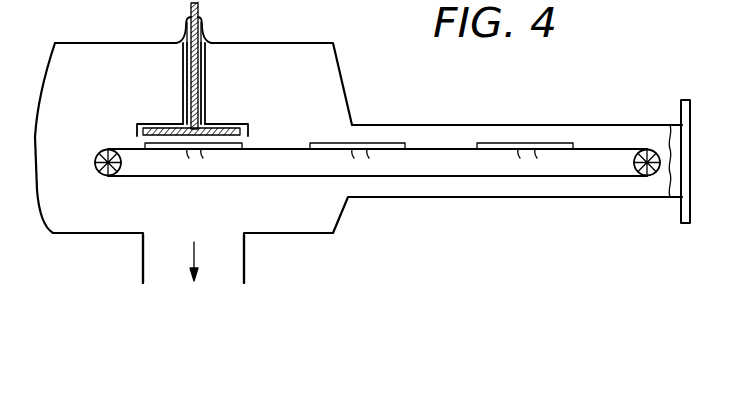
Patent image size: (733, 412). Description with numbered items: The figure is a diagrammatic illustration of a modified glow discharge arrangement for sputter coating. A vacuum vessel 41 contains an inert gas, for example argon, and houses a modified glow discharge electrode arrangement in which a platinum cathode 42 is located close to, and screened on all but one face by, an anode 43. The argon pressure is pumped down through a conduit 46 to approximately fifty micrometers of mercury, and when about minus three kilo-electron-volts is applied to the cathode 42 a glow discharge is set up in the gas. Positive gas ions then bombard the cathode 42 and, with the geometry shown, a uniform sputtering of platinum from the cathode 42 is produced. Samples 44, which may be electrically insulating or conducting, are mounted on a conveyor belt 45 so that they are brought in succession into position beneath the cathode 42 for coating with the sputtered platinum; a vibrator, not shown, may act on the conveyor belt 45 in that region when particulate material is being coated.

The vacuum vessel 41 is at (348, 75).
The platinum cathode 42 is at (222, 125).
The anode 43 is at (250, 128).
The samples 44 is at (486, 147).
The conveyor belt 45 is at (628, 152).
The conduit 46 is at (246, 260).